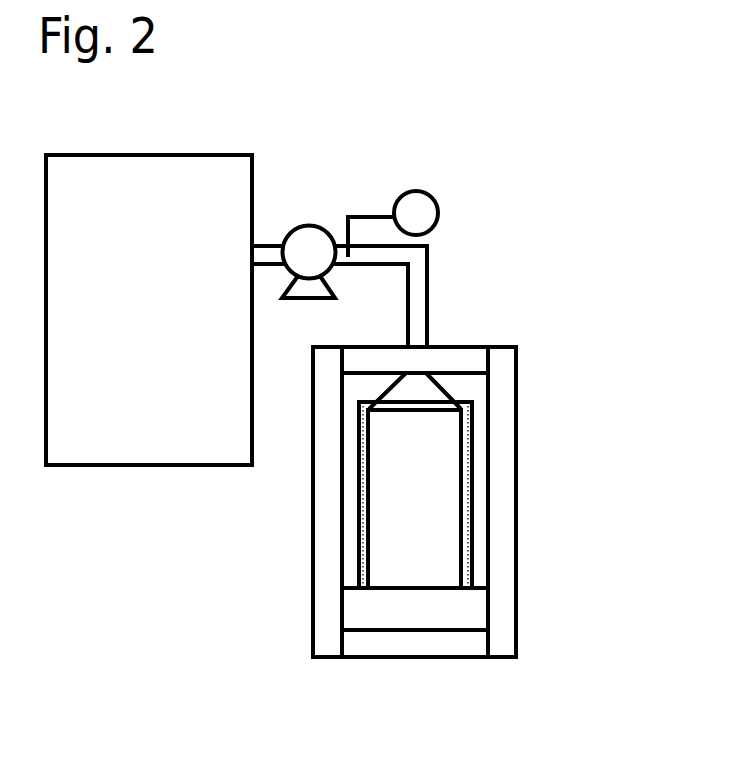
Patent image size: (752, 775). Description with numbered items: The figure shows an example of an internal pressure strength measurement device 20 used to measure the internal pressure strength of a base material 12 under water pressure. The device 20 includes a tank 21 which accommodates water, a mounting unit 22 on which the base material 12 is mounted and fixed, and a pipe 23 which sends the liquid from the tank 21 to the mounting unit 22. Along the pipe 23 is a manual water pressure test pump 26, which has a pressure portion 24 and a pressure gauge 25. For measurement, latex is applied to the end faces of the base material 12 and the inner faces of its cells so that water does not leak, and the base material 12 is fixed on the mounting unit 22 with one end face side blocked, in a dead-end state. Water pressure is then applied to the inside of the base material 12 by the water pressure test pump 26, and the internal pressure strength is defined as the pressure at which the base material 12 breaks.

The internal pressure strength measurement device 20 is at (557, 177).
The tank 21 is at (253, 164).
The mounting unit 22 is at (516, 407).
The pipe 23 is at (428, 323).
The pressure portion 24 is at (320, 224).
The pressure gauge 25 is at (412, 192).
The water pressure test pump 26 is at (338, 160).
The base material 12 is at (447, 500).